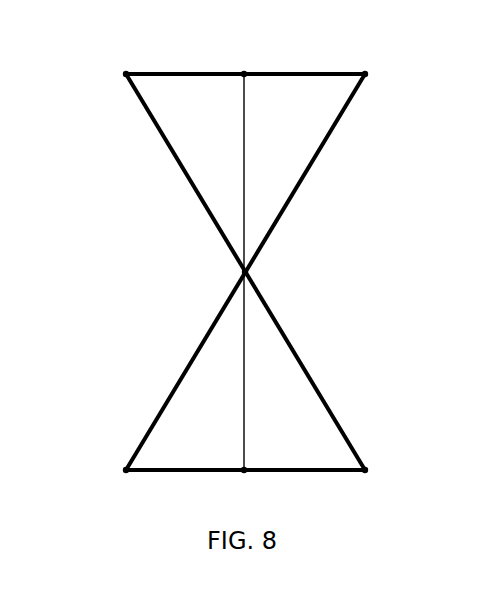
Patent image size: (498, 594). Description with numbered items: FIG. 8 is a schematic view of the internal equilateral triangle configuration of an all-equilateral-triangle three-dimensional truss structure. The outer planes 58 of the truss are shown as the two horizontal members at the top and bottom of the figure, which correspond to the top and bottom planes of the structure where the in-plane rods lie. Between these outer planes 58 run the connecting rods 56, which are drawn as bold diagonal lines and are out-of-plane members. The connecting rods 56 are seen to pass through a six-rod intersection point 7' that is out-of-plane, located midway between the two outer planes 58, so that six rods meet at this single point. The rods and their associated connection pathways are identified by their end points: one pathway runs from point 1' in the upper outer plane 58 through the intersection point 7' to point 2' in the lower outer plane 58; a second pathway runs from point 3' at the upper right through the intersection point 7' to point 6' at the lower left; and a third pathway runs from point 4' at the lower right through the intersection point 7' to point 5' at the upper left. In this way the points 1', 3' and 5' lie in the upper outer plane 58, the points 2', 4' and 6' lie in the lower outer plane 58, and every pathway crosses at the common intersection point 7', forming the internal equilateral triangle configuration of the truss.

The rod connection point 1' is at (243, 57).
The rod connection point 2' is at (243, 487).
The rod connection point 3' is at (371, 57).
The rod connection point 4' is at (366, 487).
The rod connection point 5' is at (100, 72).
The rod connection point 6' is at (116, 486).
The six-rod intersection point 7' is at (216, 272).
The connecting rod 56 is at (186, 172).
The outer plane 58 is at (207, 74).